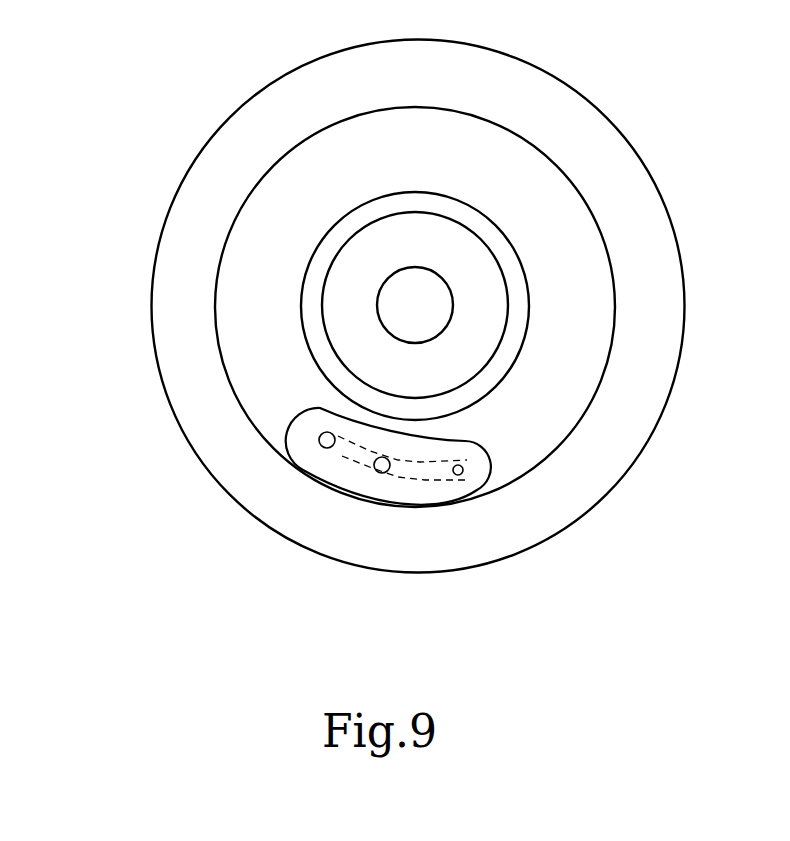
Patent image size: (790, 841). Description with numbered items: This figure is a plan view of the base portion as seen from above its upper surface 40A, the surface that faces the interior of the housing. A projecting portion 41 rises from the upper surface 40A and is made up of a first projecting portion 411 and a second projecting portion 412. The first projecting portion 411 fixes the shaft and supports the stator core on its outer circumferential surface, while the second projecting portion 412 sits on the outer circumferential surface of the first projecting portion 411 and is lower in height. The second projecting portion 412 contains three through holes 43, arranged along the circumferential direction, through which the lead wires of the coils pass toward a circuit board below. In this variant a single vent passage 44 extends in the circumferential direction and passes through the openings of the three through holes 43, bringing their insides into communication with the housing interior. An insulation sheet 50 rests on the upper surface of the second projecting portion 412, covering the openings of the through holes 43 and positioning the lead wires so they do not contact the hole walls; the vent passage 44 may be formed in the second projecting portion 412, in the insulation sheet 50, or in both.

The upper surface 40A is at (185, 320).
The projecting portion 41 is at (345, 340).
The first projecting portion 411 is at (323, 350).
The second projecting portion 412 is at (232, 372).
The through holes 43 is at (327, 448).
The vent passage 44 is at (425, 479).
The insulation sheet 50 is at (307, 453).